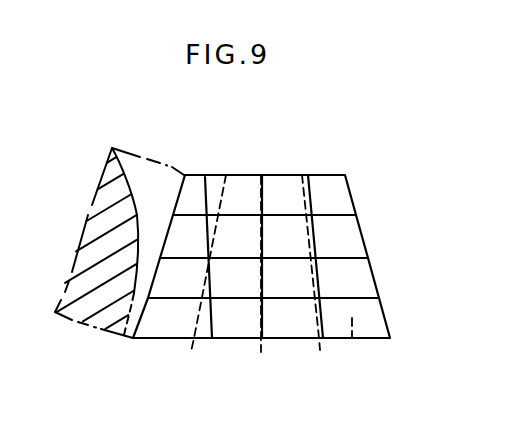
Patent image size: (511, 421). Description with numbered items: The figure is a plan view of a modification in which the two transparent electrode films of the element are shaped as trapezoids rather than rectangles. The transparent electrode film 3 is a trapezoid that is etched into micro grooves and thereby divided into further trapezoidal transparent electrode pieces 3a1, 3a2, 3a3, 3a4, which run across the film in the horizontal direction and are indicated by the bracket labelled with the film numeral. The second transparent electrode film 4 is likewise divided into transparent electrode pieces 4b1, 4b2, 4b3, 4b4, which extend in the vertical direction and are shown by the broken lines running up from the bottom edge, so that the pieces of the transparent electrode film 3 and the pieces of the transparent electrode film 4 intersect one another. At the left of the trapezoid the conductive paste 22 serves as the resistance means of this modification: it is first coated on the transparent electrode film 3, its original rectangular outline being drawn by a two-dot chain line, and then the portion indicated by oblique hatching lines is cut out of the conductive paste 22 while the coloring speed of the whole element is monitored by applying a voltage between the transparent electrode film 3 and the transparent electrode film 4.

The conductive paste 22 is at (137, 156).
The transparent electrode film 3 is at (305, 258).
The transparent electrode piece 3a1 is at (350, 193).
The transparent electrode piece 3a2 is at (360, 241).
The transparent electrode piece 3a3 is at (377, 277).
The transparent electrode piece 3a4 is at (286, 318).
The transparent electrode film 4 is at (262, 298).
The transparent electrode piece 4b1 is at (354, 345).
The transparent electrode piece 4b2 is at (290, 318).
The transparent electrode piece 4b3 is at (228, 318).
The transparent electrode piece 4b4 is at (165, 318).